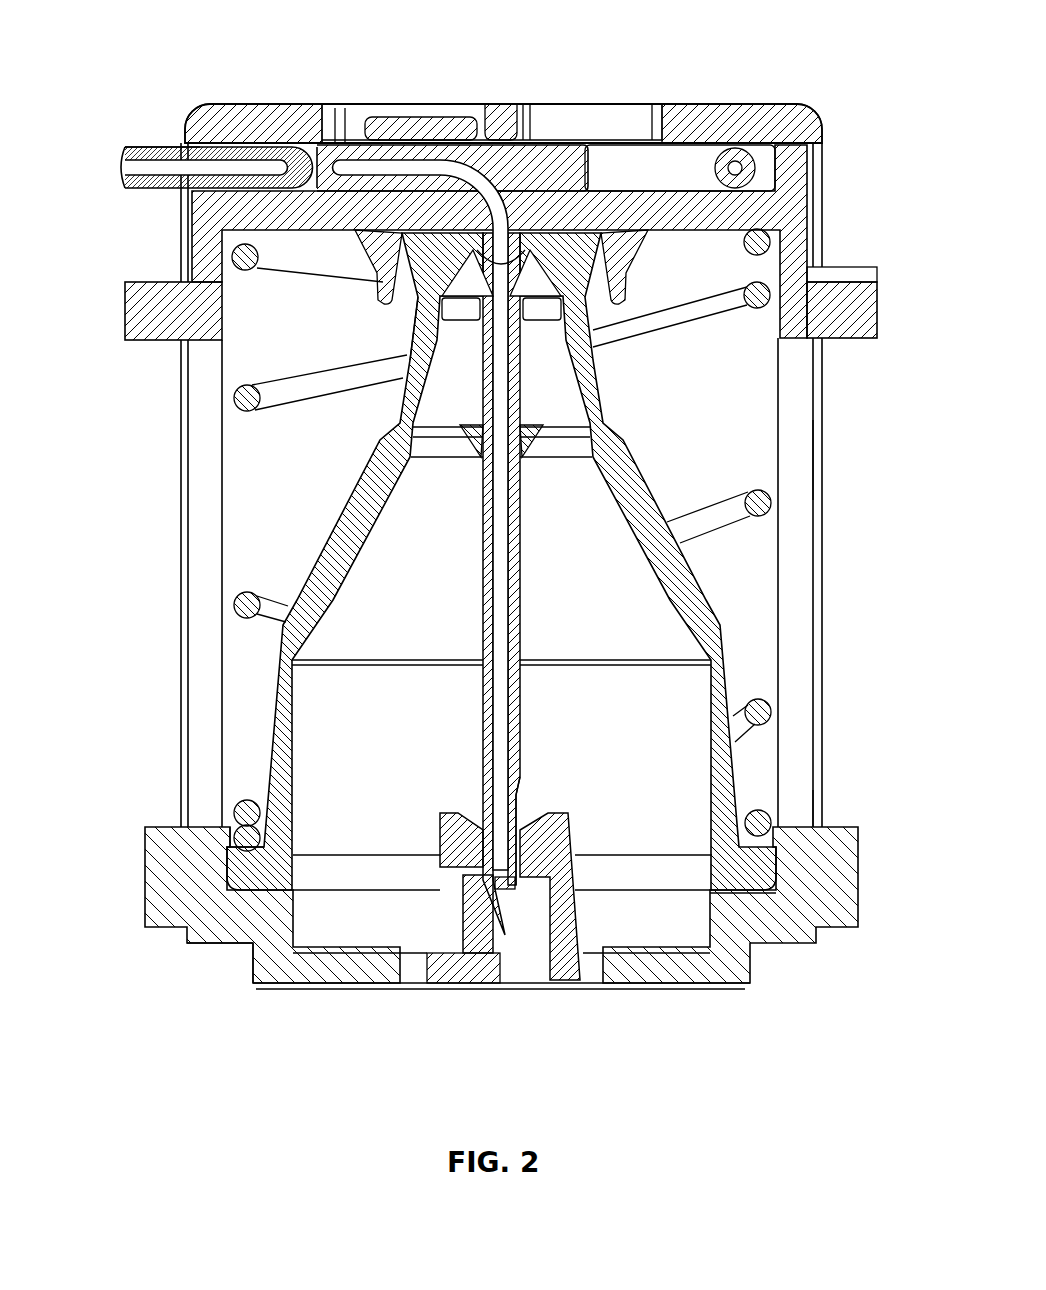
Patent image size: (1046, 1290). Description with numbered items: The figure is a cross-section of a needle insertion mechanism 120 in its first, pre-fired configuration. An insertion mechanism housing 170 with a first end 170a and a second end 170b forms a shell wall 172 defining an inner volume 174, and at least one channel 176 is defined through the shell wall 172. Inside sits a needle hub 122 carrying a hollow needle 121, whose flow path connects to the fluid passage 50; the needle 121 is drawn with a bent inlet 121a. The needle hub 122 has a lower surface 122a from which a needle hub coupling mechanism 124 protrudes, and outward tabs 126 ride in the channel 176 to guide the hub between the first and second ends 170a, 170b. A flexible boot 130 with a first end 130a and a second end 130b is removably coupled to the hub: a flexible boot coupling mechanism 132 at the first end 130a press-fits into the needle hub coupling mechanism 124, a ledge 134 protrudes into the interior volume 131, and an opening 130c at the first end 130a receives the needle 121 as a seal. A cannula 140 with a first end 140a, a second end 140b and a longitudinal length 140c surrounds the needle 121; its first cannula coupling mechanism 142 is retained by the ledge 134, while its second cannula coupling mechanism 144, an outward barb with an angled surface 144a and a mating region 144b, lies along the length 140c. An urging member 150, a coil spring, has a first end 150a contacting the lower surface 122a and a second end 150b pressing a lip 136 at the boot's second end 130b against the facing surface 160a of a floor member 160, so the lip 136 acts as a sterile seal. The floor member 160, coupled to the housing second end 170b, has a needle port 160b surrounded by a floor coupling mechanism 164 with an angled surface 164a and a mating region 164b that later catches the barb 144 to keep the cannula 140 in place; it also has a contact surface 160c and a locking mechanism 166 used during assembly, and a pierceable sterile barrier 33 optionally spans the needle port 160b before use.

The fluid passage 50 is at (160, 147).
The needle insertion mechanism 120 is at (863, 194).
The needle 121 is at (502, 731).
The tube inlet bend 121a is at (470, 150).
The needle hub 122 is at (212, 212).
The lower surface 122a is at (270, 232).
The needle hub coupling mechanism 124 is at (377, 263).
The protrusions or tabs 126 is at (145, 322).
The flexible boot 130 is at (333, 547).
The first end of flexible boot 130a is at (410, 337).
The second end of flexible boot 130b is at (307, 878).
The opening 130c is at (517, 232).
The interior volume 131 is at (650, 709).
The flexible boot coupling mechanism 132 is at (560, 270).
The flexible seat or ledge 134 is at (452, 328).
The lip 136 is at (236, 864).
The cannula 140 is at (487, 653).
The first end of cannula 140a is at (435, 303).
The second end of cannula 140b is at (527, 834).
The longitudinal length 140c is at (532, 503).
The first cannula coupling mechanism 142 is at (548, 265).
The second cannula coupling mechanism 144 is at (470, 455).
The angled surface 144a is at (560, 445).
The facing surface or mating region 144b is at (548, 425).
The urging member 150 is at (760, 247).
The first end of urging member 150a is at (765, 267).
The second end of urging member 150b is at (770, 812).
The floor member 160 is at (843, 880).
The facing surface 160a is at (751, 905).
The needle port 160b is at (591, 993).
The contact surface 160c is at (257, 988).
The floor coupling mechanism 164 is at (573, 968).
The angled surface 164a is at (480, 830).
The facing surface or mating region 164b is at (537, 883).
The locking mechanism 166 is at (237, 943).
The insertion mechanism housing 170 is at (197, 225).
The first end of housing 170a is at (829, 150).
The second end of housing 170b is at (840, 815).
The shell wall 172 is at (205, 770).
The inner volume 174 is at (760, 390).
The channel 176 is at (829, 458).
The pierceable sterile barrier 33 is at (752, 990).